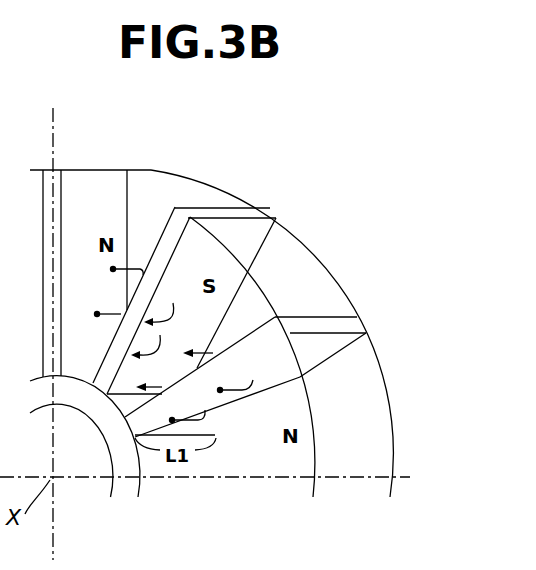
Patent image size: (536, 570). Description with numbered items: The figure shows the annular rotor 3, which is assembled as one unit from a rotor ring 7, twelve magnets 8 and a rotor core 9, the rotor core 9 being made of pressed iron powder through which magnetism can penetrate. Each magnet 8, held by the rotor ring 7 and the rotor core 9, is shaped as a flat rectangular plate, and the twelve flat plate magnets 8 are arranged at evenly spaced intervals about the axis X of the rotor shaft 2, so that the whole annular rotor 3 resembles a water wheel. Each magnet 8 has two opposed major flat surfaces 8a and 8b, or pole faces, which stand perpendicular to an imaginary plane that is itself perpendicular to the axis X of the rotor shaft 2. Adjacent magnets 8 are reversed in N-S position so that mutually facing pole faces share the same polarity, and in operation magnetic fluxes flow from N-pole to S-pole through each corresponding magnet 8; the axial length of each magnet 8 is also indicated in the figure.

The rotor shaft 2 is at (93, 458).
The annular rotor 3 is at (272, 178).
The rotor ring 7 is at (390, 417).
The magnet 8 is at (230, 195).
The major flat surface 8a is at (193, 195).
The major flat surface 8b is at (240, 240).
The rotor core 9 is at (247, 307).